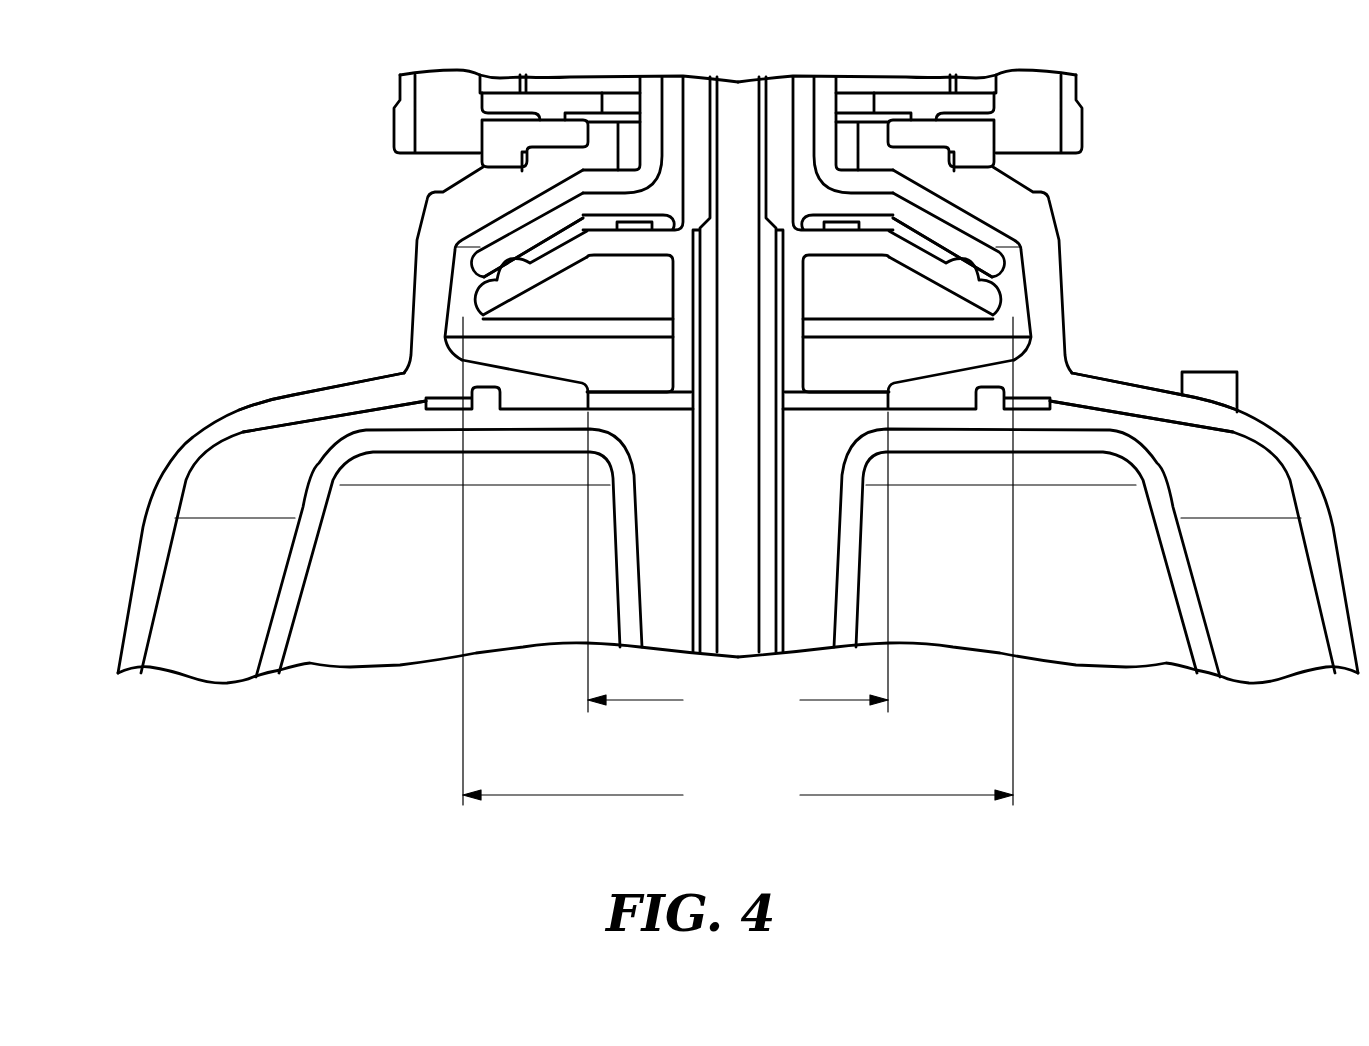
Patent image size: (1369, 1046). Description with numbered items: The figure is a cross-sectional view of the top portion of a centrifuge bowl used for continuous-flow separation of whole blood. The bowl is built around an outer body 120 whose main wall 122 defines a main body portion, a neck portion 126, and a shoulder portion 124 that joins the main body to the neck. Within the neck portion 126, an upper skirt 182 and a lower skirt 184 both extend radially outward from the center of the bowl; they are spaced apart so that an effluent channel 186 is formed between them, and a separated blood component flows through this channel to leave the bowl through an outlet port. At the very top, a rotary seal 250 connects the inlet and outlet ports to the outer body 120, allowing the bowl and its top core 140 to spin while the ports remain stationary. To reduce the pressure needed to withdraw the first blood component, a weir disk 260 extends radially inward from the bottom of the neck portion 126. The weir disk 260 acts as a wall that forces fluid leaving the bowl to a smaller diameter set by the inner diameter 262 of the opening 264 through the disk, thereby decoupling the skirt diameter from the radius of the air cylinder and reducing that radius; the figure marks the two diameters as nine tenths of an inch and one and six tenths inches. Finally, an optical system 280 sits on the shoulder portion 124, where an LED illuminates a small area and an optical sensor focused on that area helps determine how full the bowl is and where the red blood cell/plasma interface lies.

The outer body 120 is at (140, 578).
The main wall 122 is at (152, 512).
The shoulder portion 124 is at (298, 398).
The neck portion 126 is at (425, 240).
The top core 140 is at (1177, 610).
The upper skirt 182 is at (920, 215).
The lower skirt 184 is at (1003, 300).
The effluent channel 186 is at (930, 245).
The rotary seal 250 is at (392, 127).
The weir disk 260 is at (950, 390).
The inner diameter 262 is at (700, 717).
The opening 264 is at (833, 395).
The optical system 280 is at (1228, 384).